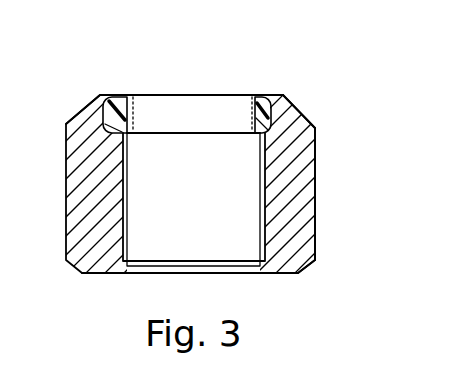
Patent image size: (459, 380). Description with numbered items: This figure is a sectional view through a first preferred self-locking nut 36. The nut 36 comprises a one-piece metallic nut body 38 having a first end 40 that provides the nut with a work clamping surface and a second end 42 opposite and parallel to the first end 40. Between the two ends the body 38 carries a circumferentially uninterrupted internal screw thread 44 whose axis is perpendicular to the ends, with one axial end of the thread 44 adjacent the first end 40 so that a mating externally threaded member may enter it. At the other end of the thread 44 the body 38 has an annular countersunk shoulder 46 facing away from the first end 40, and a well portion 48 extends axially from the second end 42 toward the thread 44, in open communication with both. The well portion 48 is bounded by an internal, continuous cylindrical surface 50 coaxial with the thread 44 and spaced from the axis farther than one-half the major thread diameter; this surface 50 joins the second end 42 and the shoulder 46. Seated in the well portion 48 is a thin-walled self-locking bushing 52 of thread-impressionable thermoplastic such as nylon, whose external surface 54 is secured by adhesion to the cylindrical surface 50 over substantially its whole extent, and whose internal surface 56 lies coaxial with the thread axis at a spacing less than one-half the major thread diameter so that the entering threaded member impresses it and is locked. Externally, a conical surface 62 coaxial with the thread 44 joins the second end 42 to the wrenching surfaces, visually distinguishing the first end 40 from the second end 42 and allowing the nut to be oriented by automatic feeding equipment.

The nut 36 is at (331, 190).
The nut body 38 is at (80, 216).
The first end 40 is at (281, 275).
The second end 42 is at (270, 98).
The internal screw thread 44 is at (260, 200).
The annular countersunk shoulder 46 is at (112, 135).
The well portion 48 is at (272, 112).
The cylindrical surface 50 is at (258, 106).
The self-locking bushing 52 is at (180, 108).
The external surface of bushing 54 is at (106, 98).
The internal surface of bushing 56 is at (200, 107).
The external conical surface 62 is at (81, 113).